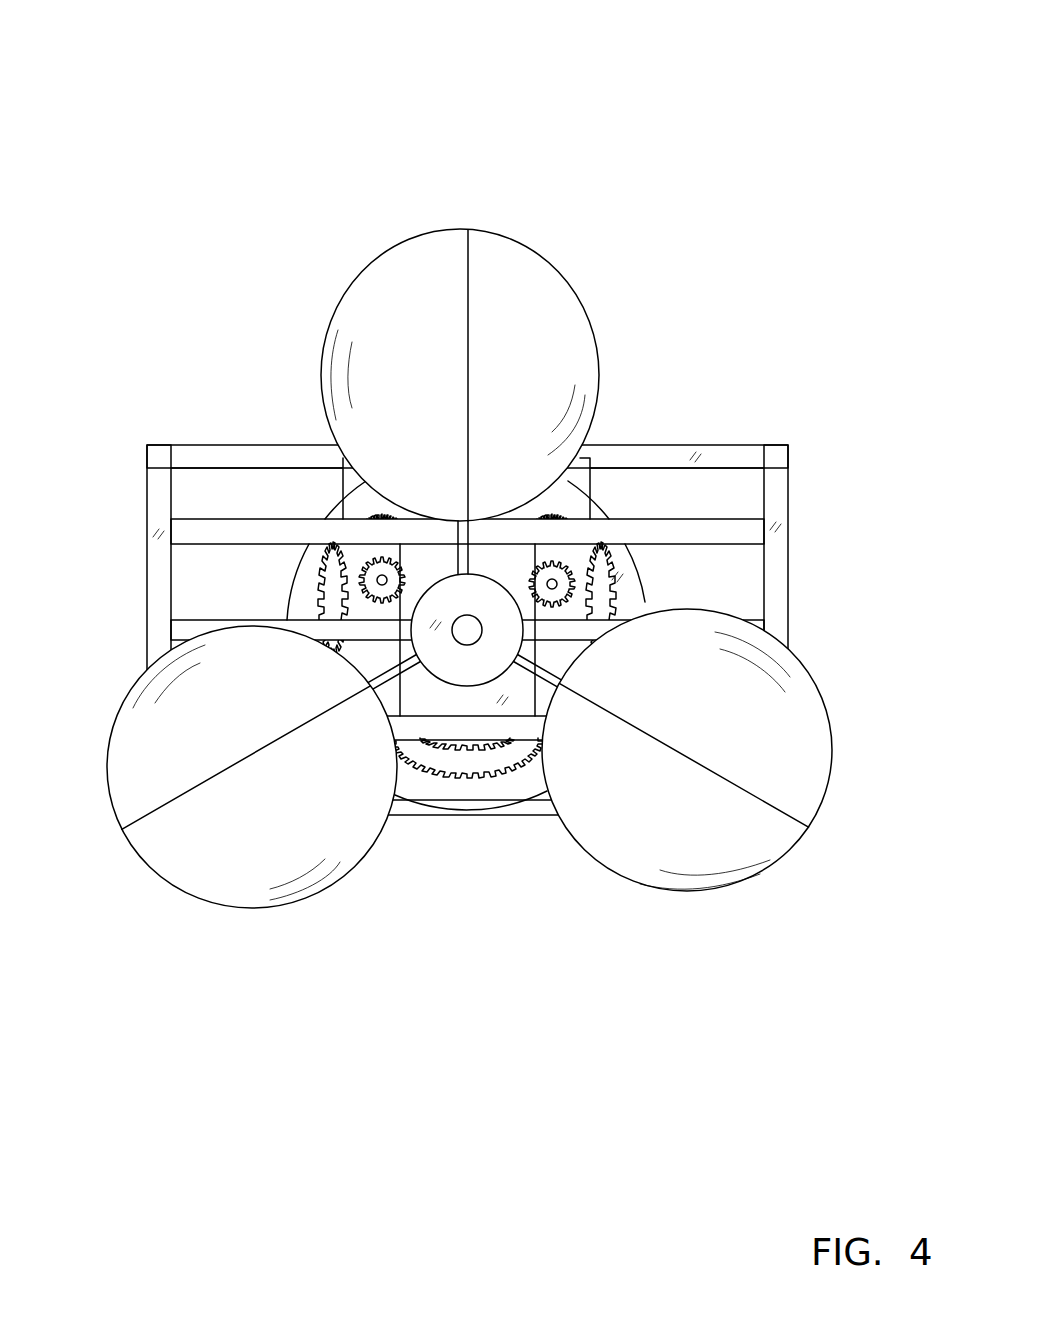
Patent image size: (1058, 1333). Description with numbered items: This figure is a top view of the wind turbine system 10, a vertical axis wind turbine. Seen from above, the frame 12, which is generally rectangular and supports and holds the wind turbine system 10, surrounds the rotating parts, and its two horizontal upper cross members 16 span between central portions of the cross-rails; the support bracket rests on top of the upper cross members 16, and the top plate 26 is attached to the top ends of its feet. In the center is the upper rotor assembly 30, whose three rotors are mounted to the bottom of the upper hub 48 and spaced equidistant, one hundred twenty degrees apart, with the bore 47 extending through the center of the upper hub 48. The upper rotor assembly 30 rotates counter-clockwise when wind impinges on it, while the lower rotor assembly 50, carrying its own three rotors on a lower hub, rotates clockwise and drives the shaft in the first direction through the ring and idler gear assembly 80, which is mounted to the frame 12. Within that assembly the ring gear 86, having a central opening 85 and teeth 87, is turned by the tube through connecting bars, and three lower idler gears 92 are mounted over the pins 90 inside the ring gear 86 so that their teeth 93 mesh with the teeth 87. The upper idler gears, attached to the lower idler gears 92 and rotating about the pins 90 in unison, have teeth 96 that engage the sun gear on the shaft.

The wind turbine system 10 is at (240, 107).
The frame 12 is at (790, 495).
The upper cross members 16 is at (677, 518).
The top plate 26 is at (437, 695).
The upper rotor assembly 30 is at (412, 310).
The bore 47 is at (468, 642).
The upper hub 48 is at (487, 607).
The lower rotor assembly 50 is at (537, 255).
The ring and idler gear assembly 80 is at (643, 573).
The central opening 85 is at (377, 652).
The ring gear 86 is at (300, 600).
The teeth 87 is at (613, 603).
The pin 90 is at (378, 578).
The lower idler gears 92 is at (343, 552).
The teeth 93 is at (535, 742).
The teeth 96 is at (460, 776).